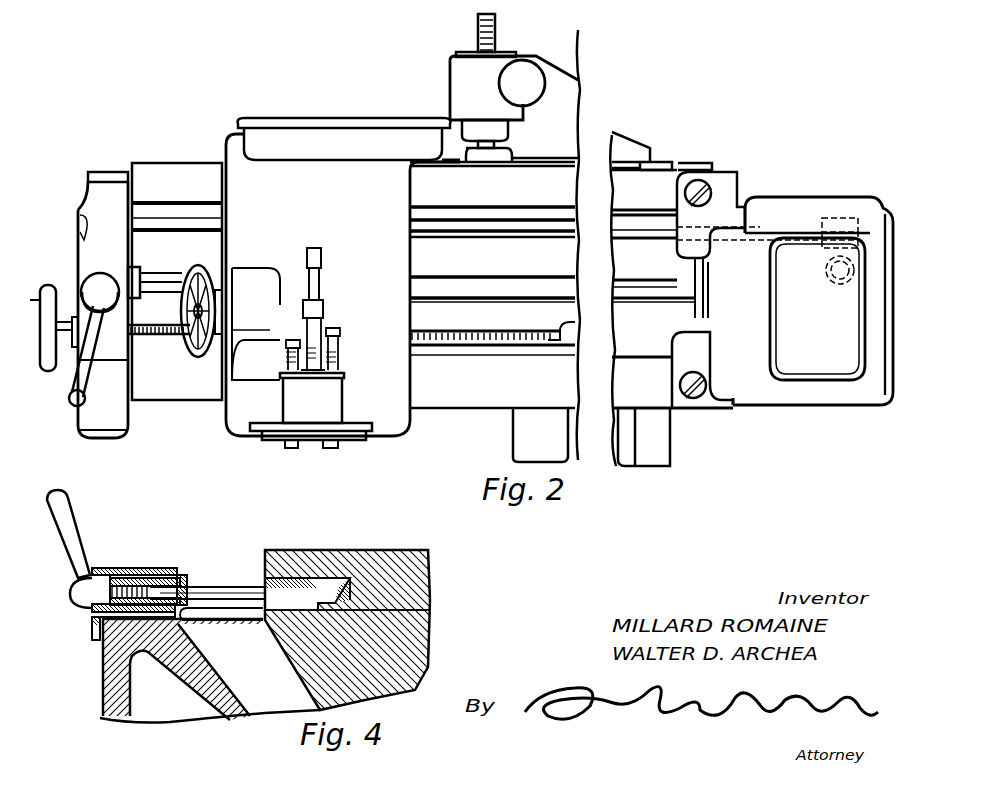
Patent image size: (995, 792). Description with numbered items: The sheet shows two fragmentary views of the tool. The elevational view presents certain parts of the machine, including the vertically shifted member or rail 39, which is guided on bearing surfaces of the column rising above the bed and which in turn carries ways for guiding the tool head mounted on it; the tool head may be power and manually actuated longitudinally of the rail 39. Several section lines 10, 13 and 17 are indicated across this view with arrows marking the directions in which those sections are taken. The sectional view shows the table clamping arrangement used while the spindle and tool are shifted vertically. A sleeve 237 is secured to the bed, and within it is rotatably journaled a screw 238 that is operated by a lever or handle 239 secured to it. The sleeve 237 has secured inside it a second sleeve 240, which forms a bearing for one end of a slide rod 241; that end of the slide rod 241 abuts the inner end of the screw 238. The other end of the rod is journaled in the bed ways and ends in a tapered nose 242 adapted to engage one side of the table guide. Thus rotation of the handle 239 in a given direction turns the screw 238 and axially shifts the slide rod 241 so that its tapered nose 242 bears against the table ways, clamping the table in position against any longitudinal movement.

In FIG. 2, the section line 10 is at (100, 225).
In FIG. 2, the section line 13 is at (317, 225).
In FIG. 2, the section line 17 is at (300, 310).
In FIG. 2, the rail 39 is at (196, 172).
In FIG. 4, the sleeve 237 is at (118, 572).
In FIG. 4, the screw 238 is at (112, 568).
In FIG. 4, the lever or handle 239 is at (66, 532).
In FIG. 4, the second sleeve 240 is at (178, 576).
In FIG. 4, the slide rod 241 is at (206, 586).
In FIG. 4, the tapered nose 242 is at (318, 556).